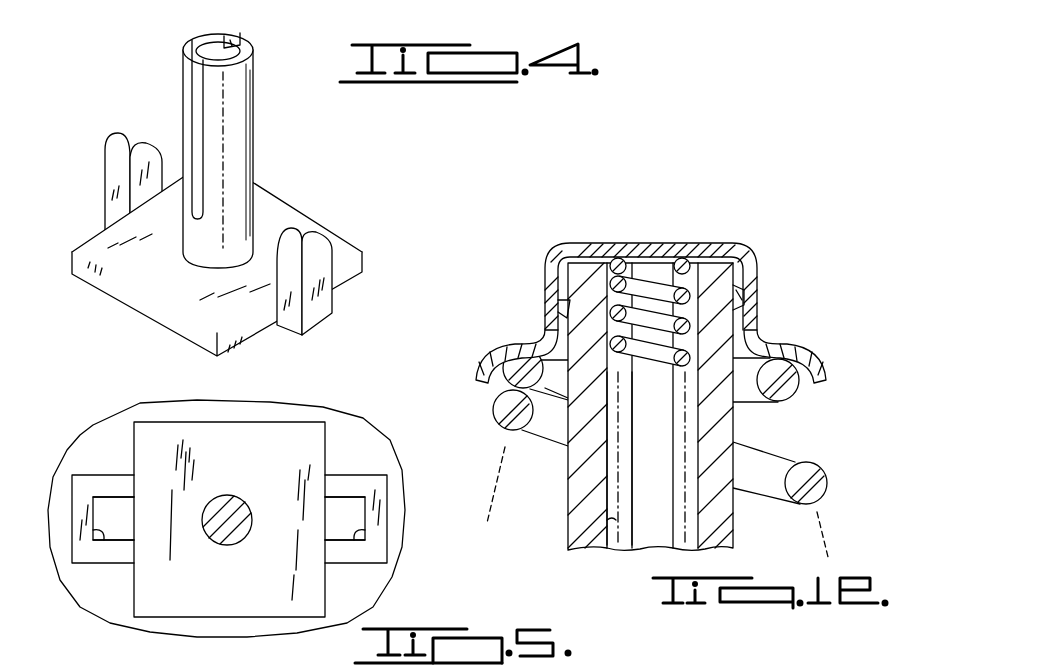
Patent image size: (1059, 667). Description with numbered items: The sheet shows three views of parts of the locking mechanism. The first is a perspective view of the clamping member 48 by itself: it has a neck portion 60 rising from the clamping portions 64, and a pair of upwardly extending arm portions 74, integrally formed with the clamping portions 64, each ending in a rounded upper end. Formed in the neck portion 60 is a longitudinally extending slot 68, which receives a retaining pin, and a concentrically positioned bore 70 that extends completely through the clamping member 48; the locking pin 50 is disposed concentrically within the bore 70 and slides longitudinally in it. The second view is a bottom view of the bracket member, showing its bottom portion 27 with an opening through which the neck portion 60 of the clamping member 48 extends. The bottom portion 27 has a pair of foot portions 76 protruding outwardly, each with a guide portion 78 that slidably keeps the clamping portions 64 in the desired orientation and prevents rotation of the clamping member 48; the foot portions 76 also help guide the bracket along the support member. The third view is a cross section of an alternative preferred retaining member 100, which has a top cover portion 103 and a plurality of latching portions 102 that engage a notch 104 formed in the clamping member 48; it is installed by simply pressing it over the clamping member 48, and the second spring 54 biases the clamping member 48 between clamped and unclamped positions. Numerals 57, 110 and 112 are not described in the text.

In FIG. 5, the bottom portion 27 is at (113, 437).
In FIG. 4, the clamping member 48 is at (74, 171).
In FIG. 5, the locking pin 50 is at (240, 506).
In FIG. 12, the second spring 54 is at (820, 482).
In FIG. 12, the spring 57 is at (648, 287).
In FIG. 4, the neck portion 60 is at (240, 120).
In FIG. 12, the neck portion 60 is at (754, 436).
In FIG. 4, the clamping portions 64 is at (140, 270).
In FIG. 5, the clamping portions 64 is at (218, 438).
In FIG. 4, the longitudinally extending slot 68 is at (197, 90).
In FIG. 12, the longitudinally extending slot 68 is at (630, 498).
In FIG. 4, the bore 70 is at (201, 46).
In FIG. 12, the bore 70 is at (612, 520).
In FIG. 4, the arm portions 74 is at (117, 148).
In FIG. 5, the arm portions 74 is at (117, 517).
In FIG. 5, the foot portions 76 is at (77, 512).
In FIG. 5, the guide portion 78 is at (102, 534).
In FIG. 12, the retaining member 100 is at (747, 227).
In FIG. 12, the latching portions 102 is at (570, 320).
In FIG. 12, the top cover portion 103 is at (690, 243).
In FIG. 5, the notch 104 is at (63, 660).
In FIG. 12, the notch 104 is at (733, 287).
In FIG. 5, the member 110 is at (255, 661).
In FIG. 5, the member 112 is at (213, 660).